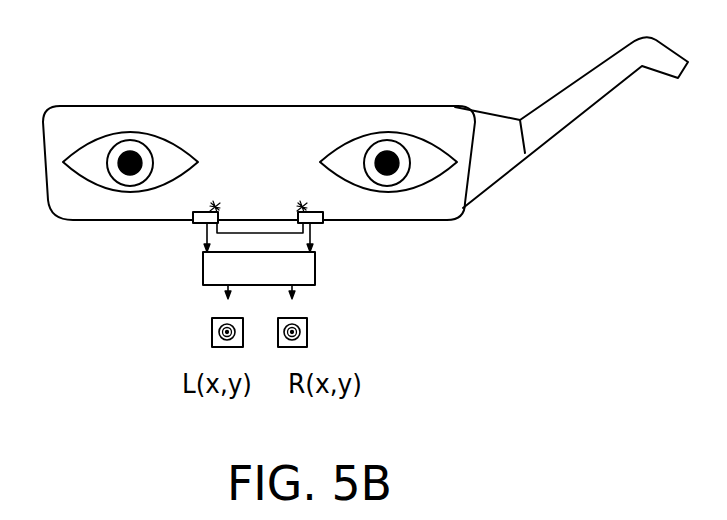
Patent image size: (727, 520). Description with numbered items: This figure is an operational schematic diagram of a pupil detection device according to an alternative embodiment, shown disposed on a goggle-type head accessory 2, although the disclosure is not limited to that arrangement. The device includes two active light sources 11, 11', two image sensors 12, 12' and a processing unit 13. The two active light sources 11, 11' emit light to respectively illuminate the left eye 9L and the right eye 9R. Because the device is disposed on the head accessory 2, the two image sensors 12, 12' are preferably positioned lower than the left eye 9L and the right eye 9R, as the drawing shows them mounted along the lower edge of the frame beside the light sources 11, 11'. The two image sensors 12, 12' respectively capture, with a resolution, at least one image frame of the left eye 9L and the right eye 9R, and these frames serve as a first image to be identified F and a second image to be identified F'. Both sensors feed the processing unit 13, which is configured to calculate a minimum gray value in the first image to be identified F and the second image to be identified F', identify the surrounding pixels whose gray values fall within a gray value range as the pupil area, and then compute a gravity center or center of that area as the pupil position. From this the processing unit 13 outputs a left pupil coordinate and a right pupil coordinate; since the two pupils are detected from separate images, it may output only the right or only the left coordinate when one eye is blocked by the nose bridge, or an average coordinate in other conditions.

The head accessory 2 is at (570, 86).
The left eye 9L is at (120, 132).
The right eye 9R is at (397, 133).
The active light source 11 is at (215, 131).
The active light source 11' is at (307, 130).
The image sensor 12 is at (169, 235).
The image sensor 12' is at (359, 234).
The processing unit 13 is at (203, 269).
The first image to be identified F is at (207, 334).
The second image to be identified F' is at (321, 334).